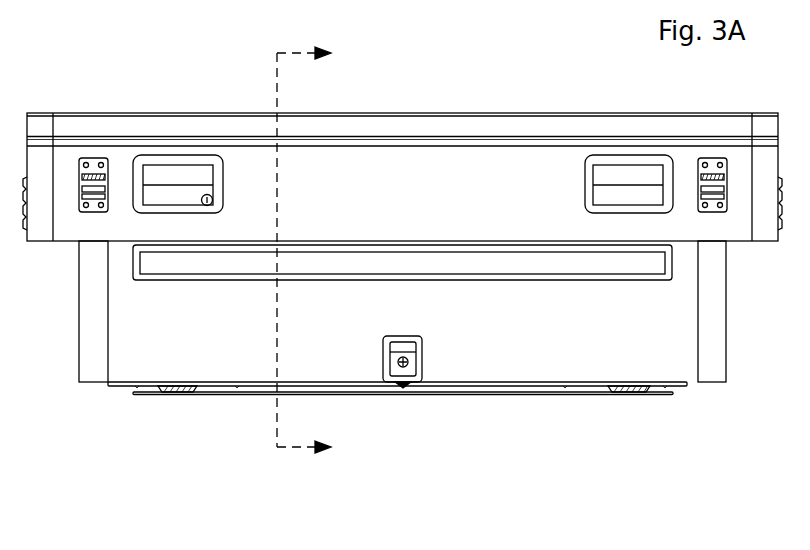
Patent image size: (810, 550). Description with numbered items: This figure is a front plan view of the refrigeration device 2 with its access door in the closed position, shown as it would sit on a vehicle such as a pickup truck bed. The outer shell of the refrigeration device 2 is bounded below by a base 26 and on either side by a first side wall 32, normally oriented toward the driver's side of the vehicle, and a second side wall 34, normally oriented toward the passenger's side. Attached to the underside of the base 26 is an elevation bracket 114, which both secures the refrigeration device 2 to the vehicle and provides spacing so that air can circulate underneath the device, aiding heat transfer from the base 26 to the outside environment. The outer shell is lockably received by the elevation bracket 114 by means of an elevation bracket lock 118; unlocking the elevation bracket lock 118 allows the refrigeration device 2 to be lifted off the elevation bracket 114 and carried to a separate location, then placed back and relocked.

The refrigeration device 2 is at (108, 483).
The base 26 is at (502, 387).
The first side wall 32 is at (79, 283).
The second side wall 34 is at (726, 288).
The elevation bracket 114 is at (665, 395).
The elevation bracket lock 118 is at (422, 360).